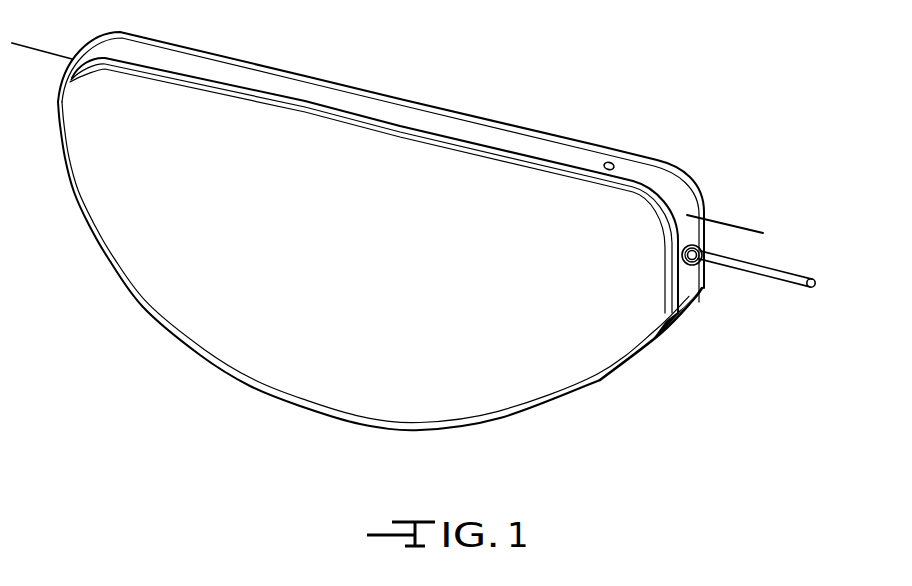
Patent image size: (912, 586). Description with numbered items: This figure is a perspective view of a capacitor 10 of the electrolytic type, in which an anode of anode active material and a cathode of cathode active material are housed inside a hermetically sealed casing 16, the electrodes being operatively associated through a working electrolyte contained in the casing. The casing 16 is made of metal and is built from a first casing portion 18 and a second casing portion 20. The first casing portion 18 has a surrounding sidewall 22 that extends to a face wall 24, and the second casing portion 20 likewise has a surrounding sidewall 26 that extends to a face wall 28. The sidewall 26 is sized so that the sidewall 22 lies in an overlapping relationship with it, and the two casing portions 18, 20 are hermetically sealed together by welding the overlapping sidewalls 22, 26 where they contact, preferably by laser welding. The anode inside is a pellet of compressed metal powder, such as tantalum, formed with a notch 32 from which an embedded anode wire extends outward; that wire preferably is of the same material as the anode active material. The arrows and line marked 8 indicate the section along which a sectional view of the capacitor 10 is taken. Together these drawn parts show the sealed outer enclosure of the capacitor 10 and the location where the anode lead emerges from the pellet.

The section line 8- 8 is at (20, 47).
The capacitor 10 is at (430, 218).
The casing 16 is at (433, 97).
The first casing portion 18 is at (172, 288).
The second casing portion 20 is at (246, 80).
The surrounding sidewall 22 is at (385, 128).
The face wall 24 is at (588, 368).
The surrounding sidewall 26 is at (500, 140).
The face wall 28 is at (592, 140).
The notch 32 is at (795, 275).